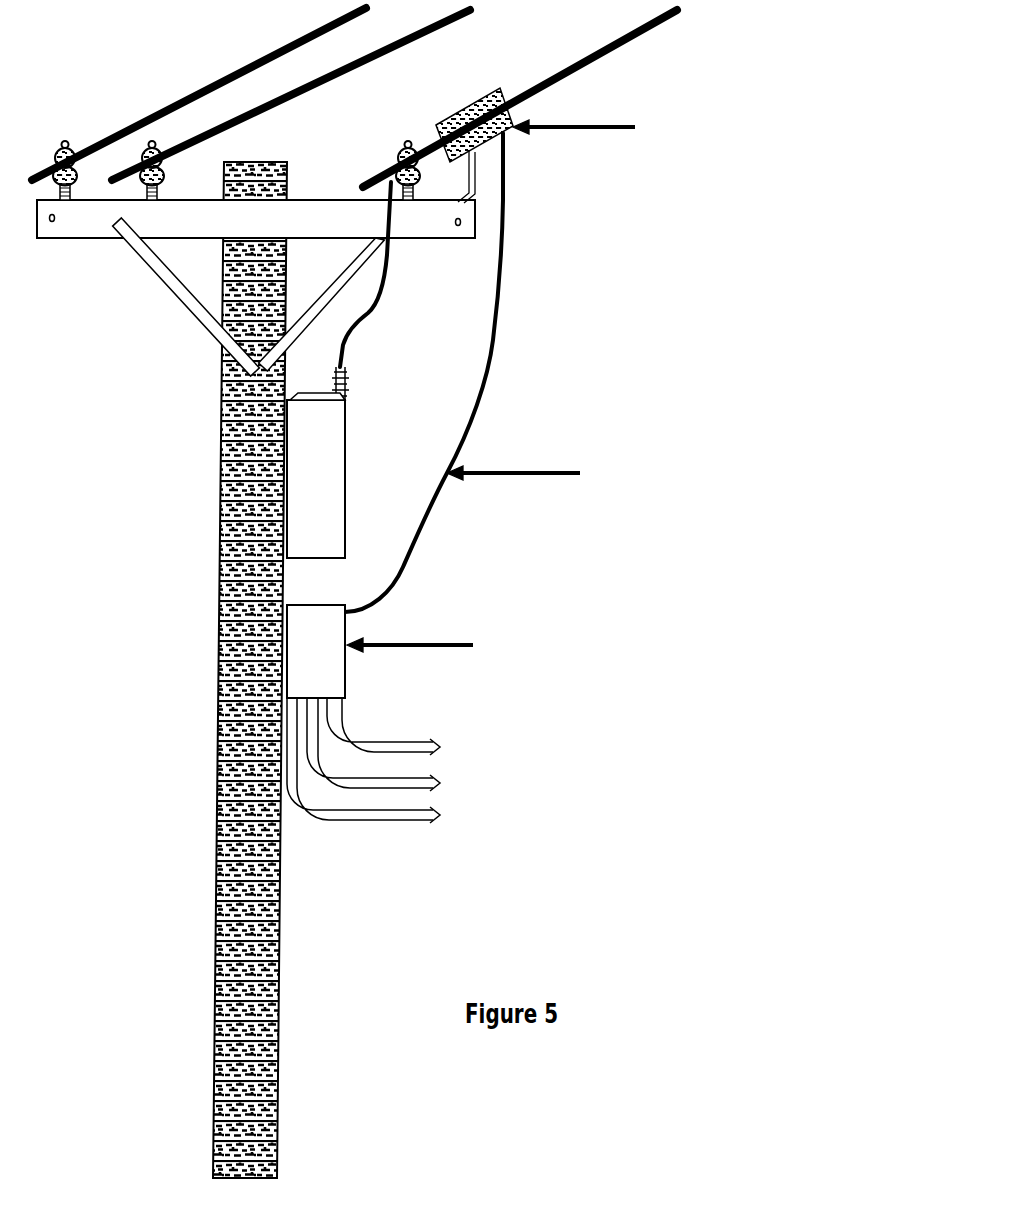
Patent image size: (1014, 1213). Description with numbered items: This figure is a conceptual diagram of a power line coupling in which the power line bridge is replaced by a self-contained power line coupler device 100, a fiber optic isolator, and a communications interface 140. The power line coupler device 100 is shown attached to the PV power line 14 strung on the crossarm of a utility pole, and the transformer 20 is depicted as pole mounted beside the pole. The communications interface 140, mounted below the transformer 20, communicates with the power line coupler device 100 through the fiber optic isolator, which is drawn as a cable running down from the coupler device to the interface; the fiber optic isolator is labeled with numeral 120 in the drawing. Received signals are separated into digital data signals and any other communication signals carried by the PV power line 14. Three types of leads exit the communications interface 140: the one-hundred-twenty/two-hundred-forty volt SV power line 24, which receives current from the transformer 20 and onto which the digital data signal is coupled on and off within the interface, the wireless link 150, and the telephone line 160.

The power line coupler device 100 is at (455, 110).
The PV power line 14 is at (557, 83).
The fiber optic isolator 120 is at (497, 343).
The transformer 20 is at (347, 455).
The communications interface 140 is at (307, 600).
The SV power line 24 is at (608, 750).
The wireless link 150 is at (548, 786).
The telephone line 160 is at (525, 818).